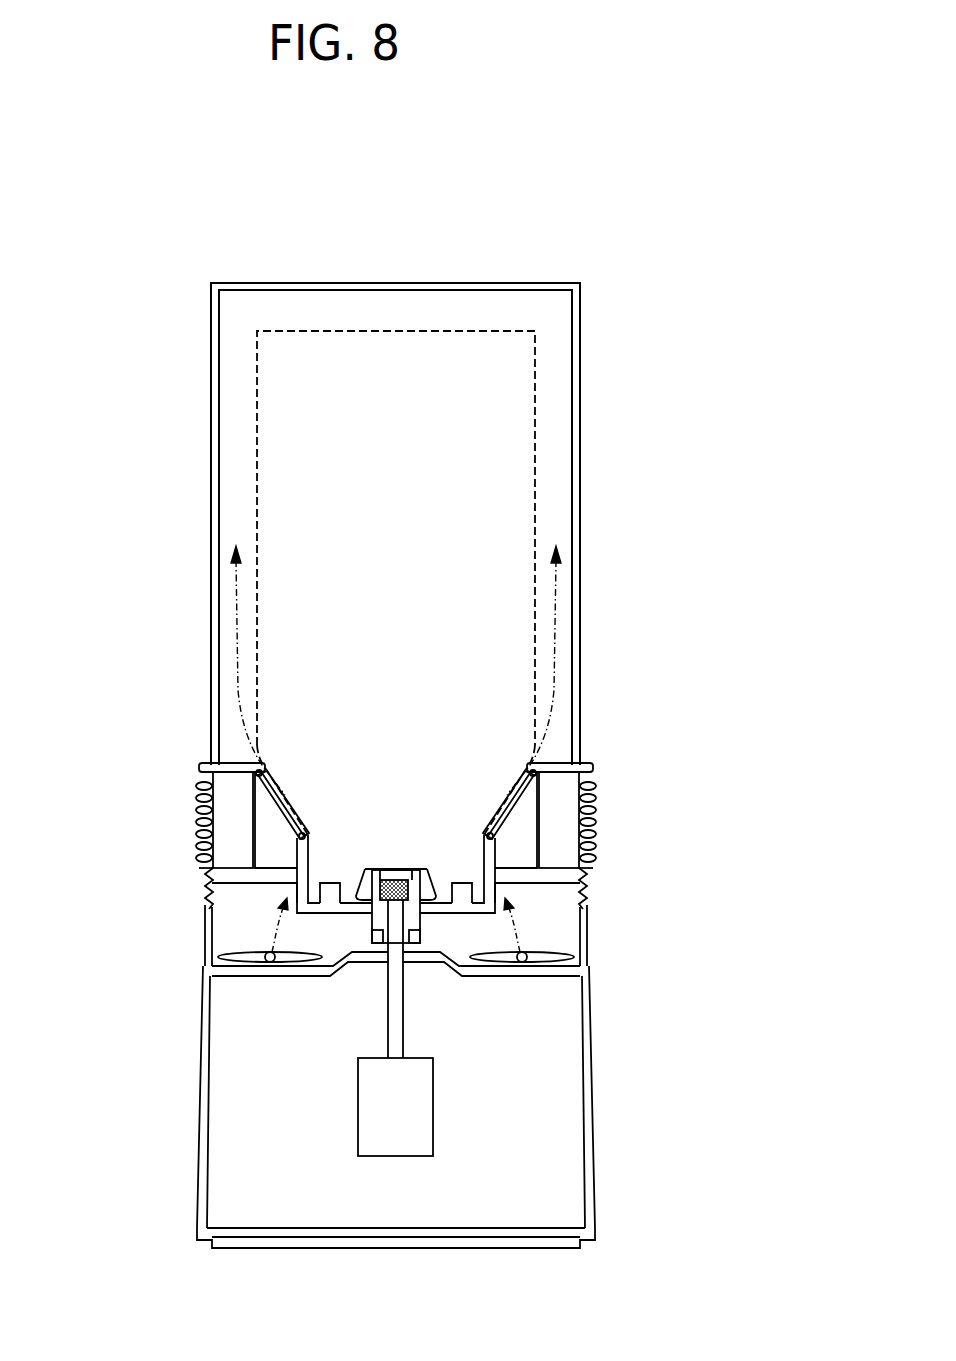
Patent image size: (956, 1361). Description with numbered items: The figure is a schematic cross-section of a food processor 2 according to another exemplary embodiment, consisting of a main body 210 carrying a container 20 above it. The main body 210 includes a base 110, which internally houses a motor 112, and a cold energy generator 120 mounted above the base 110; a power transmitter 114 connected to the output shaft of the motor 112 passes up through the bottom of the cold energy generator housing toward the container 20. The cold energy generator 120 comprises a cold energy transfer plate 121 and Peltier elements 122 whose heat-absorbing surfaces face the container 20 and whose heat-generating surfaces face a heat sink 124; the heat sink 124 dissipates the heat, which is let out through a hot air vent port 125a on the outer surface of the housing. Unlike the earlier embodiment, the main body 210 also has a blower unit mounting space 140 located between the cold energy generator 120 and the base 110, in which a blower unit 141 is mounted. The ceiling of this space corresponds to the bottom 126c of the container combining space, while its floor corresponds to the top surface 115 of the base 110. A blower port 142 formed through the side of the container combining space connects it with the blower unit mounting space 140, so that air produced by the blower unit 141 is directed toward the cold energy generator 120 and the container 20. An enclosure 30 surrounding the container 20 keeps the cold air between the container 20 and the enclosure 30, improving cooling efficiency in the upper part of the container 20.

The food processor 2 is at (384, 192).
The container 20 is at (537, 450).
The enclosure 30 is at (583, 490).
The base 110 is at (596, 1120).
The motor 112 is at (400, 1157).
The power transmitter 114 is at (380, 868).
The top surface of the base 115 is at (242, 975).
The cold energy generator 120 is at (190, 810).
The cold energy transfer plate 121 is at (540, 790).
The Peltier element 122 is at (520, 823).
The heat sink 124 is at (522, 850).
The hot air vent port 125a is at (592, 778).
The bottom of the container combining space 126c is at (315, 913).
The blower unit mounting space 140 is at (543, 925).
The blower unit 141 is at (218, 957).
The blower port 142 is at (500, 875).
The main body 210 is at (168, 1152).